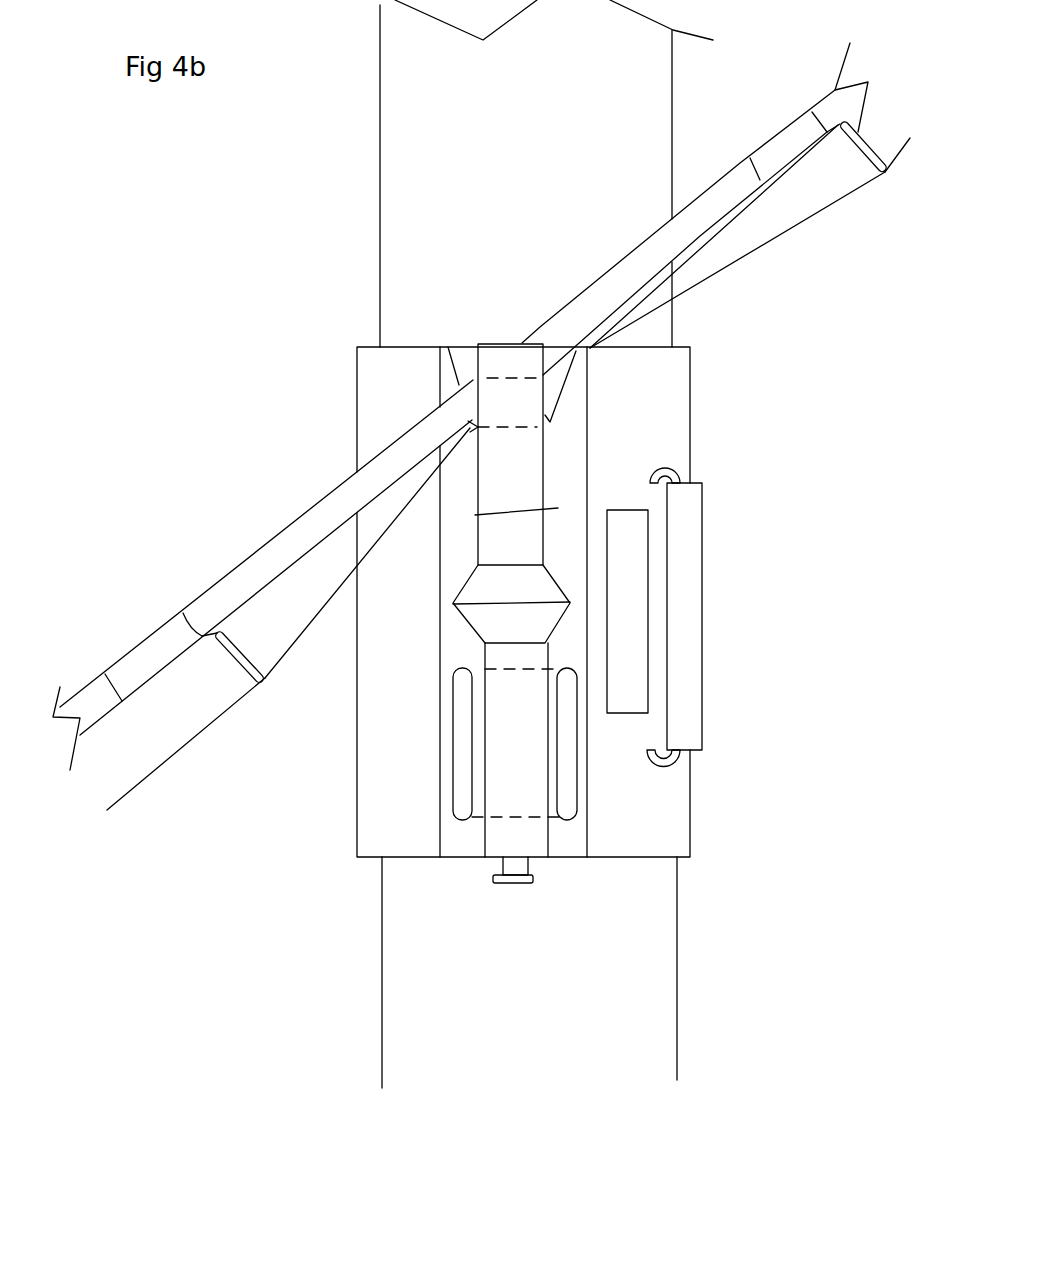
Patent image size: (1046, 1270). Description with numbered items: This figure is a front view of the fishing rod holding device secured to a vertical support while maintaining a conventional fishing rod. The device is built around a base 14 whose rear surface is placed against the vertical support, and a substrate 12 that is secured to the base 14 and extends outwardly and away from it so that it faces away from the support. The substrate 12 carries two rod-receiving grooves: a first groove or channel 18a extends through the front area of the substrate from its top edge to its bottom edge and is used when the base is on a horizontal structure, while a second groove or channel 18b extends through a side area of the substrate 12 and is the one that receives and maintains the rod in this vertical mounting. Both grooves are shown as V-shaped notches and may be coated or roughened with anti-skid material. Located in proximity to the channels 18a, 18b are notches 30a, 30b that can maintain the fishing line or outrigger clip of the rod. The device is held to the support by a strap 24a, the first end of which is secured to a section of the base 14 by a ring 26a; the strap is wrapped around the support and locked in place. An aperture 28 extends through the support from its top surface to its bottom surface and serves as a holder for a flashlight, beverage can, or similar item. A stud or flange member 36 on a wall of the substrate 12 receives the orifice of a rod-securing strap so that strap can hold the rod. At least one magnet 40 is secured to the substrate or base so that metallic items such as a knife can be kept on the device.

The substrate 12 is at (463, 842).
The base 14 is at (380, 822).
The first groove or channel 18a is at (485, 618).
The second groove or channel 18b is at (467, 373).
The strap 24a is at (712, 645).
The ring 26a is at (680, 467).
The aperture 28 is at (462, 752).
The notch 30a is at (567, 507).
The notch 30b is at (502, 347).
The stud or flange member 36 is at (510, 897).
The magnet 40 is at (632, 558).